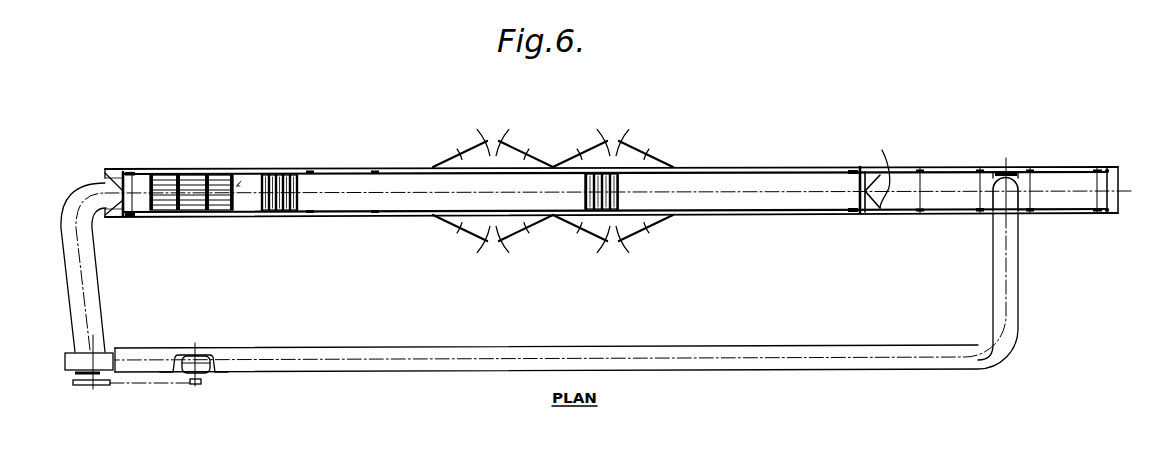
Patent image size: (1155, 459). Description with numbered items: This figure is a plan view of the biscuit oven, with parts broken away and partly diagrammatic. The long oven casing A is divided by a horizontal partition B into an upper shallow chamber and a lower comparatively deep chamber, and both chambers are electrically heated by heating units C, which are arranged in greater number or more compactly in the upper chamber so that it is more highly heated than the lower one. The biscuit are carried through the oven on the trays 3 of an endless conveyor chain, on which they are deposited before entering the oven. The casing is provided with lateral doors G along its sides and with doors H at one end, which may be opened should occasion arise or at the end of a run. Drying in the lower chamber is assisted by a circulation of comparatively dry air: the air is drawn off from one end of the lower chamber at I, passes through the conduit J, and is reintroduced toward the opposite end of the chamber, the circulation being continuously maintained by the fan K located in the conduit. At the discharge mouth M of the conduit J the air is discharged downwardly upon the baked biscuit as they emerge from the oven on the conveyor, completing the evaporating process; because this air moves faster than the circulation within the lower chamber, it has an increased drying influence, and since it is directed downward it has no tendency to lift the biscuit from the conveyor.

The oven casing A is at (327, 168).
The horizontal partition B is at (381, 174).
The air draw-off point I is at (118, 190).
The heating units C is at (215, 187).
The trays 3 is at (298, 190).
The lateral doors G is at (553, 166).
The end doors H is at (868, 171).
The discharge mouth M is at (1013, 193).
The conduit J is at (363, 366).
The fan K is at (65, 363).